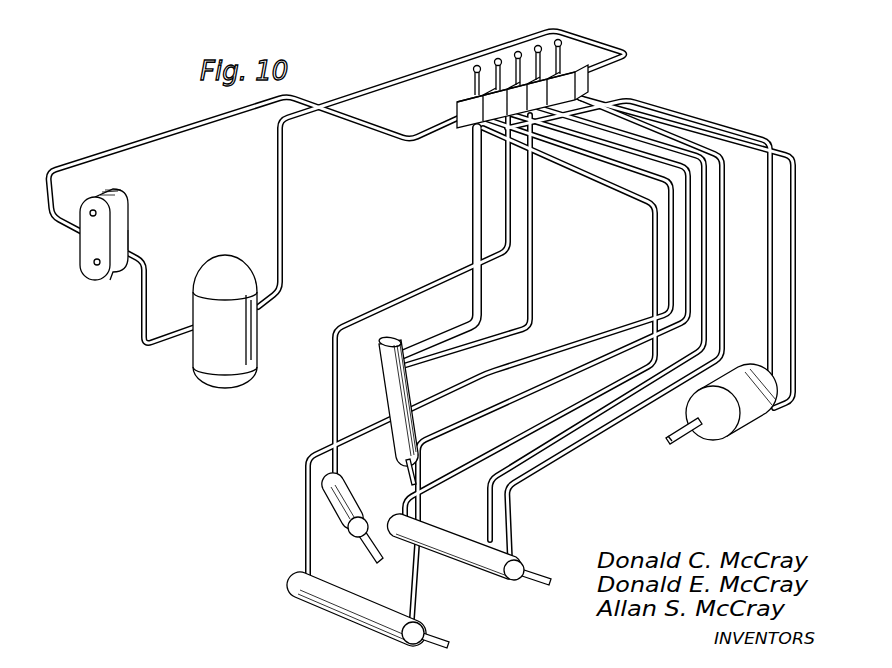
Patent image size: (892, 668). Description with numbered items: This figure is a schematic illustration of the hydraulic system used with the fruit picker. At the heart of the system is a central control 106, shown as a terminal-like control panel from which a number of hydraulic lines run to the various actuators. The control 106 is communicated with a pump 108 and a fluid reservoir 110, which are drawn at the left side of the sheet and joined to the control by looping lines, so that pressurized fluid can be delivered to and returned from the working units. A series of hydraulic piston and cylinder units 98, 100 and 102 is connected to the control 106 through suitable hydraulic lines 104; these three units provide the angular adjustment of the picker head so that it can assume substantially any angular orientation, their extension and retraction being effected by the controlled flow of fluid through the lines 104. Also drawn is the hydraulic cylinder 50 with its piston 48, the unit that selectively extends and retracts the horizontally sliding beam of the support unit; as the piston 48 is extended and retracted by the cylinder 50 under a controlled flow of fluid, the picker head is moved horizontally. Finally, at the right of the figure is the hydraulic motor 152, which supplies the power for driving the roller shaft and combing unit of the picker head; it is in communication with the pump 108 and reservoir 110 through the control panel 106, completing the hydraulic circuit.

The piston 48 is at (430, 638).
The hydraulic cylinder 50 is at (343, 600).
The hydraulic piston and cylinder unit 98 is at (418, 388).
The hydraulic piston and cylinder unit 100 is at (348, 488).
The hydraulic piston and cylinder unit 102 is at (437, 527).
The hydraulic lines 104 is at (583, 405).
The central control 106 is at (465, 130).
The pump 108 is at (117, 222).
The fluid reservoir 110 is at (235, 336).
The hydraulic motor 152 is at (740, 432).